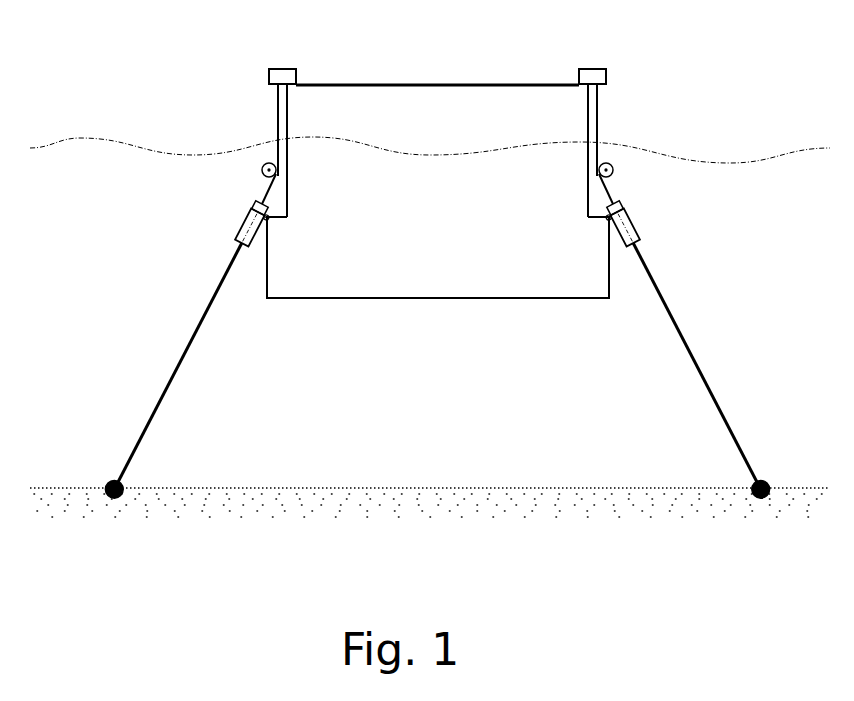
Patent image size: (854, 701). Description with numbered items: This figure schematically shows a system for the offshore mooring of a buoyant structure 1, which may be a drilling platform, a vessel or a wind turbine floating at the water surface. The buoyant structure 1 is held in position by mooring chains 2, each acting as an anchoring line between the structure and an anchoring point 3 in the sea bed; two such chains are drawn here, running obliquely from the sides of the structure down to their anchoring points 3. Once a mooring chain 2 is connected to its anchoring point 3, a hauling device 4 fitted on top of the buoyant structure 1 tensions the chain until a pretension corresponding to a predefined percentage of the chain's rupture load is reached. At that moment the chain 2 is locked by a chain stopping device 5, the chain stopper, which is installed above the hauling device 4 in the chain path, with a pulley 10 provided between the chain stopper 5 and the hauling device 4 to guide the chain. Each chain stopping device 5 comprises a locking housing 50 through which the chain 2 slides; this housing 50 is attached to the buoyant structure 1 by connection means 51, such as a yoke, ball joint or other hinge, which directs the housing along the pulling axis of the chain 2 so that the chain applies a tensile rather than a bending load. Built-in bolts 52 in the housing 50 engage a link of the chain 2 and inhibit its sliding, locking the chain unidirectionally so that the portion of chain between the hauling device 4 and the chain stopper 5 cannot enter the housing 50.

The buoyant structure 1 is at (432, 85).
The mooring chain 2 is at (197, 325).
The anchoring point 3 is at (109, 482).
The hauling device 4 is at (282, 70).
The chain stopping device 5 is at (226, 242).
The pulley 10 is at (266, 164).
The locking housing 50 is at (243, 223).
The connection means 51 is at (259, 203).
The bolts 52 is at (257, 206).